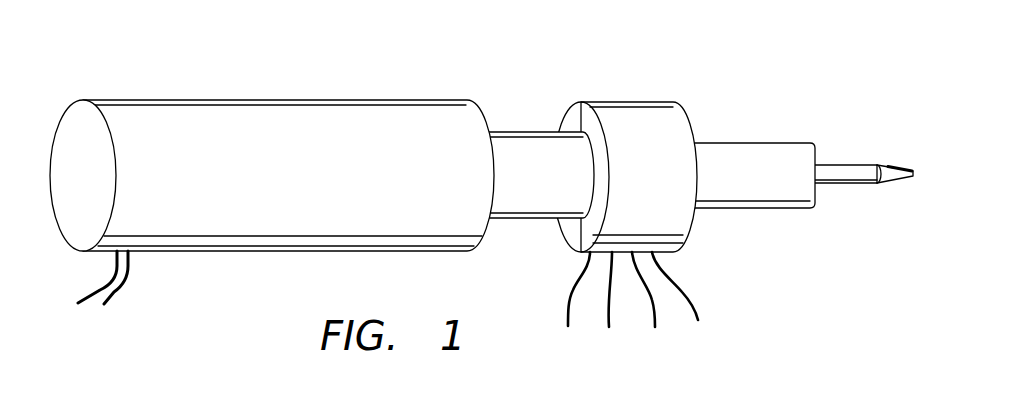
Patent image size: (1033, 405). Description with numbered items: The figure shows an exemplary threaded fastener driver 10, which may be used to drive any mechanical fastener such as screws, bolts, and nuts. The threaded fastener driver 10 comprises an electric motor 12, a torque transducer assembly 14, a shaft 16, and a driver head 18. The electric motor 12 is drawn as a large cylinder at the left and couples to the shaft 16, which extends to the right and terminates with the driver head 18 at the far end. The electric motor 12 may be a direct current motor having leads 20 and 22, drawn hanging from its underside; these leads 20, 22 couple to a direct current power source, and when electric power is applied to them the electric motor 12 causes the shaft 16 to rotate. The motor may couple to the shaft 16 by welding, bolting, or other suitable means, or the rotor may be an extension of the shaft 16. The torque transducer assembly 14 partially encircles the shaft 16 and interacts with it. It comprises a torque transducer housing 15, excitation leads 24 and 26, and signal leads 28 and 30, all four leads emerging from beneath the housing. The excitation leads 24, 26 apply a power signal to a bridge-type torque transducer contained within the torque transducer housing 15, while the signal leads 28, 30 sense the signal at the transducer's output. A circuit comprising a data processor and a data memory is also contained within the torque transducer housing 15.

The threaded fastener driver 10 is at (82, 57).
The electric motor 12 is at (133, 100).
The torque transducer assembly 14 is at (580, 78).
The torque transducer housing 15 is at (625, 101).
The shaft 16 is at (730, 143).
The driver head 18 is at (880, 165).
The lead 20 is at (82, 296).
The lead 22 is at (119, 288).
The excitation lead 24 is at (566, 308).
The excitation lead 26 is at (696, 311).
The signal lead 28 is at (604, 318).
The signal lead 30 is at (648, 314).